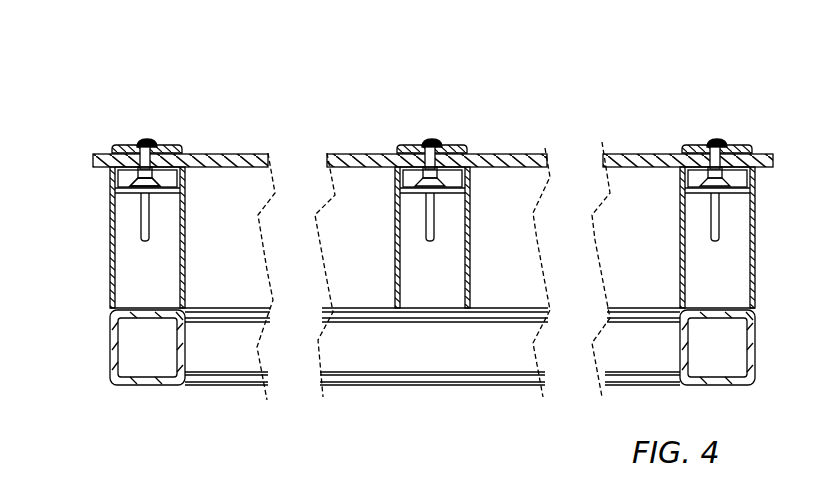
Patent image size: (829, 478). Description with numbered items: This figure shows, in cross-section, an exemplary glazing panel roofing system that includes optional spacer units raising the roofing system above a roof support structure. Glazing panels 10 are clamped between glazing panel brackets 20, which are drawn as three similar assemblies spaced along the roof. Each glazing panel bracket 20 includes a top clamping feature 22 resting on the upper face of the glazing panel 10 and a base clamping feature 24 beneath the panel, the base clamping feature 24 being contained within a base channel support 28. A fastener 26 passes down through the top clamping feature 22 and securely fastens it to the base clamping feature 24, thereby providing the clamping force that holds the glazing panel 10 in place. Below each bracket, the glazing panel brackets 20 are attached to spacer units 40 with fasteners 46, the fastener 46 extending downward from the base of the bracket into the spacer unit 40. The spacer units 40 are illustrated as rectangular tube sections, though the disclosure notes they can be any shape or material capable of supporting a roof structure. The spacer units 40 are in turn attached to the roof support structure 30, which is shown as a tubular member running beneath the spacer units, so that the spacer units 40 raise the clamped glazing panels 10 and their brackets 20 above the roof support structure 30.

The glazing panel 10 is at (235, 153).
The glazing panel bracket 20 is at (406, 148).
The top clamping feature 22 is at (118, 145).
The base clamping feature 24 is at (112, 186).
The fastener 26 is at (150, 137).
The base channel support 28 is at (110, 173).
The roof support structure 30 is at (110, 340).
The spacer unit 40 is at (110, 258).
The fastener 46 is at (143, 228).